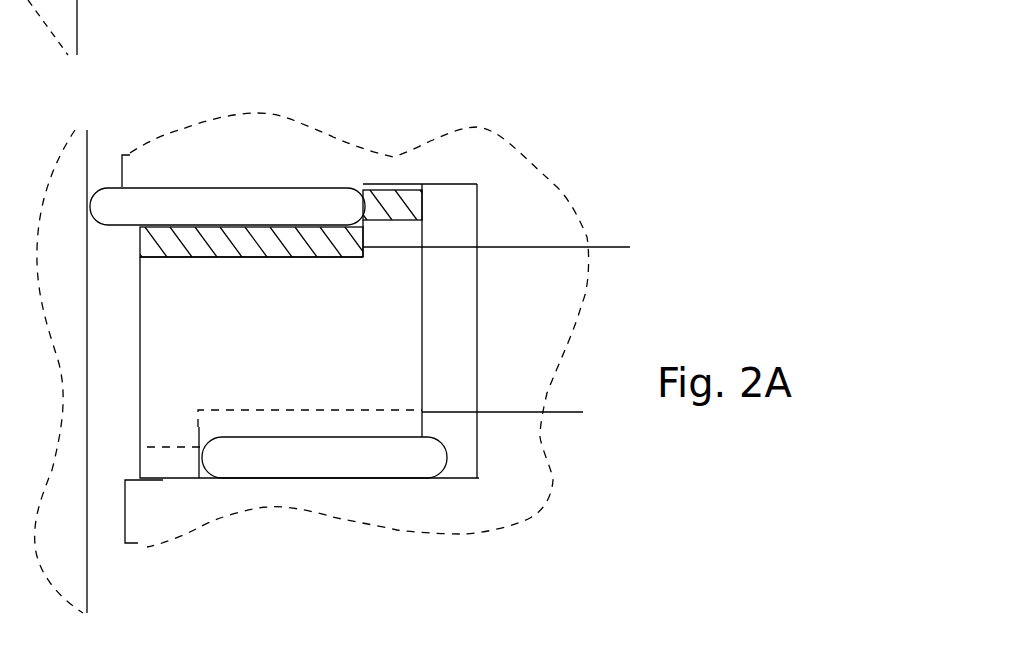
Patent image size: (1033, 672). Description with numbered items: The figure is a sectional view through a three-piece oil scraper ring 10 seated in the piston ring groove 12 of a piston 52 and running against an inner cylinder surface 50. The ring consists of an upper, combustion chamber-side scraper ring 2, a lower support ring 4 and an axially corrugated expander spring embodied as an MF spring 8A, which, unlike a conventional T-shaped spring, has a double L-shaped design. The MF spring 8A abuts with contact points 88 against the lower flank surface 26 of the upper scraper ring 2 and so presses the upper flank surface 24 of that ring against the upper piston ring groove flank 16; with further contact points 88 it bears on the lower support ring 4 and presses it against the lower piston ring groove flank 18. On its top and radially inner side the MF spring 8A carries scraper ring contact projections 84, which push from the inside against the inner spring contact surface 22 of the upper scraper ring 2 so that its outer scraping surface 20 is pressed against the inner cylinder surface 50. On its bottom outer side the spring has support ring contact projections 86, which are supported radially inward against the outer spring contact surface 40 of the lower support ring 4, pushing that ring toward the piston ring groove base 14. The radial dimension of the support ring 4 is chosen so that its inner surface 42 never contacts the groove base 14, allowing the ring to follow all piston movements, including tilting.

The upper scraper ring 2 is at (227, 207).
The lower support ring 4 is at (340, 457).
The MF spring 8A is at (185, 367).
The oil scraper ring 10 is at (672, 186).
The piston ring groove 12 is at (453, 330).
The piston ring groove base 14 is at (477, 312).
The upper piston ring groove flank 16 is at (443, 184).
The lower piston ring groove flank 18 is at (447, 478).
The outer scraping surface 20 is at (95, 192).
The inner spring contact surface 22 is at (350, 197).
The upper flank surface 24 is at (300, 193).
The lower flank surface 26 is at (182, 225).
The outer spring contact surface 40 is at (210, 443).
The inner surface 42 is at (447, 458).
The inner cylinder surface 50 is at (87, 290).
The piston 52 is at (359, 330).
The scraper ring contact projections 84 is at (385, 193).
The support ring contact projections 86 is at (167, 460).
The contact points 88 is at (630, 247).